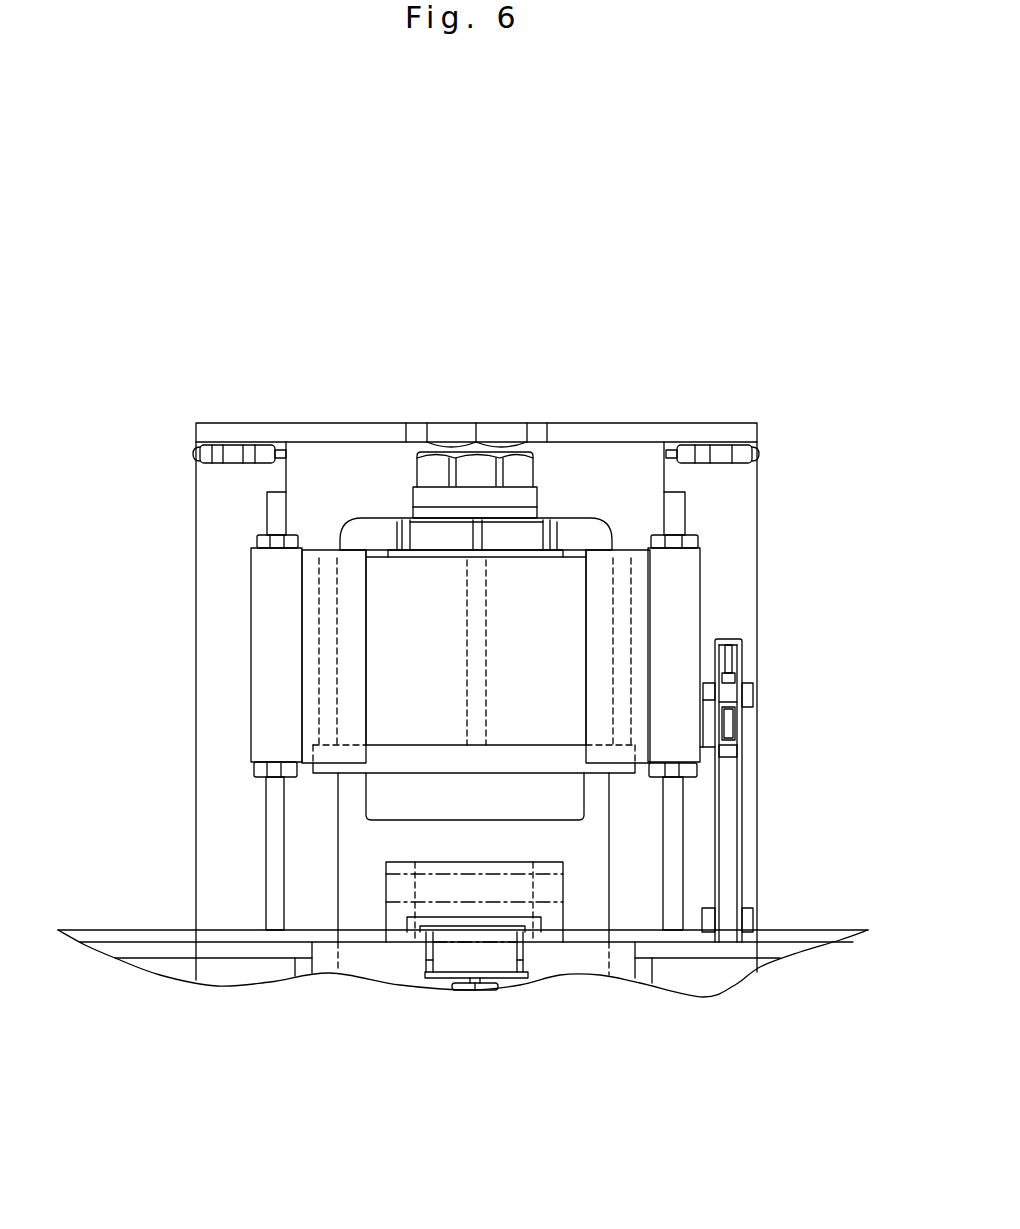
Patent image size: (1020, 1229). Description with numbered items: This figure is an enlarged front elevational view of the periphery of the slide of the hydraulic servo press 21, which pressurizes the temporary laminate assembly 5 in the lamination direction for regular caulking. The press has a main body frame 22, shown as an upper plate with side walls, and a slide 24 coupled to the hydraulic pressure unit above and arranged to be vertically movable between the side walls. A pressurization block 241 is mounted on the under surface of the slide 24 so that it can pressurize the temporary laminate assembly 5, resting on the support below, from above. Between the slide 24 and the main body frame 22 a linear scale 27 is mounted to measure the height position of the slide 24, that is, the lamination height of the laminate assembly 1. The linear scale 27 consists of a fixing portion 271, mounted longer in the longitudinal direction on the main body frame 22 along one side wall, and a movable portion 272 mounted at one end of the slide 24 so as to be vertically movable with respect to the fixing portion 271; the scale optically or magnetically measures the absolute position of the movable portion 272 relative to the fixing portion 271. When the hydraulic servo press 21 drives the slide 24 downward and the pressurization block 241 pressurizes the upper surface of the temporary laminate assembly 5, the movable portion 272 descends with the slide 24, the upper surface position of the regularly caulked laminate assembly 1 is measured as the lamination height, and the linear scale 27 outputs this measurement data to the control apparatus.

The hydraulic servo press 21 is at (247, 378).
The main body frame 22 is at (205, 648).
The slide 24 is at (545, 635).
The pressurization block 241 is at (387, 805).
The linear scale 27 is at (788, 790).
The fixing portion 271 is at (728, 838).
The movable portion 272 is at (727, 721).
The laminate assembly 1 is at (555, 888).
The temporary laminate assembly 5 is at (489, 966).